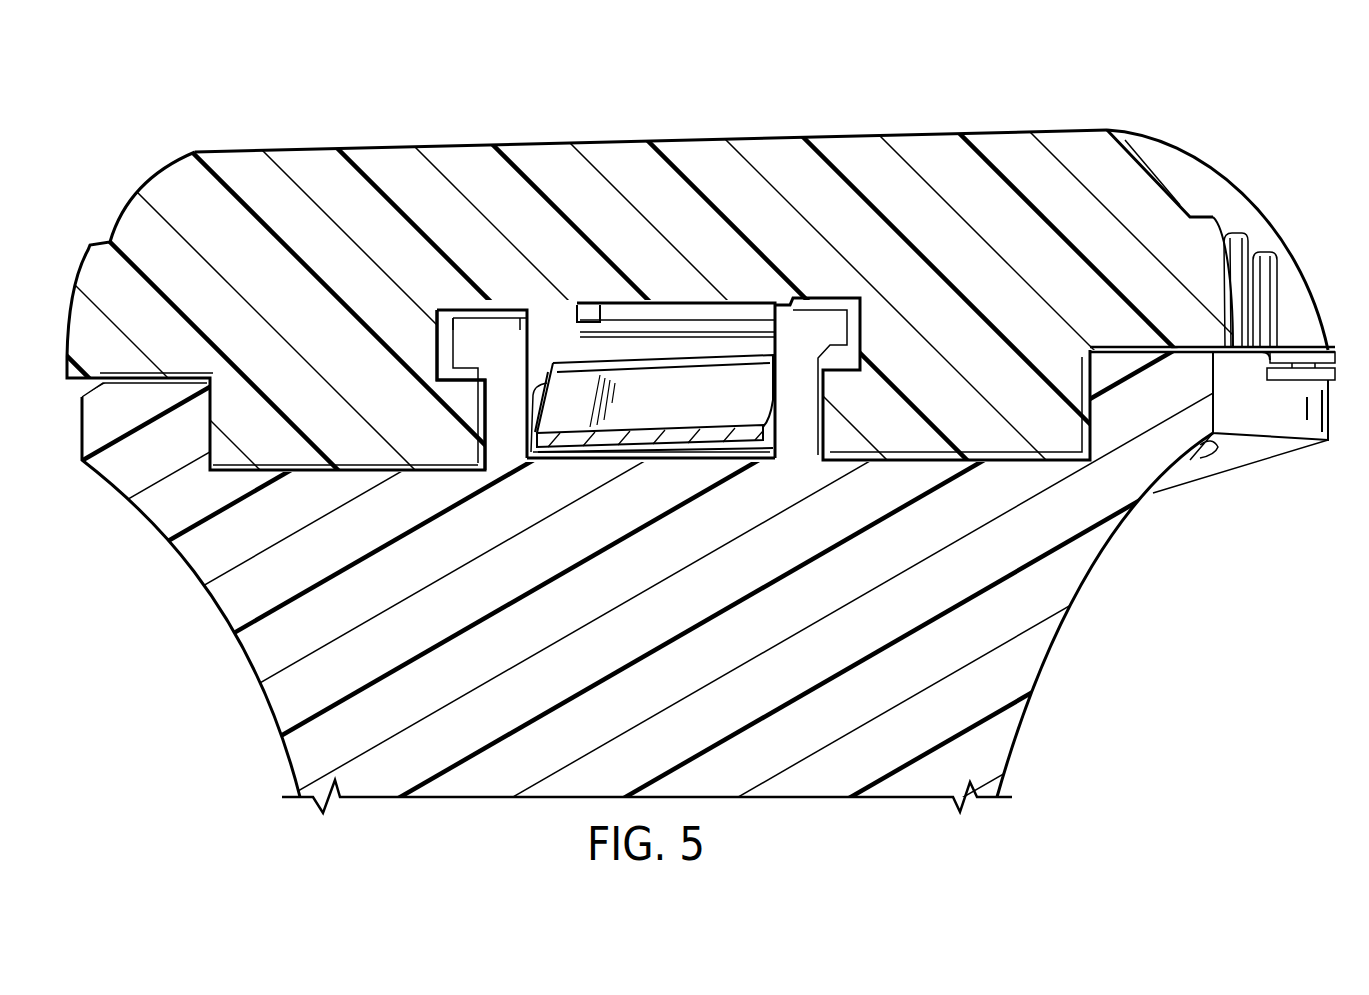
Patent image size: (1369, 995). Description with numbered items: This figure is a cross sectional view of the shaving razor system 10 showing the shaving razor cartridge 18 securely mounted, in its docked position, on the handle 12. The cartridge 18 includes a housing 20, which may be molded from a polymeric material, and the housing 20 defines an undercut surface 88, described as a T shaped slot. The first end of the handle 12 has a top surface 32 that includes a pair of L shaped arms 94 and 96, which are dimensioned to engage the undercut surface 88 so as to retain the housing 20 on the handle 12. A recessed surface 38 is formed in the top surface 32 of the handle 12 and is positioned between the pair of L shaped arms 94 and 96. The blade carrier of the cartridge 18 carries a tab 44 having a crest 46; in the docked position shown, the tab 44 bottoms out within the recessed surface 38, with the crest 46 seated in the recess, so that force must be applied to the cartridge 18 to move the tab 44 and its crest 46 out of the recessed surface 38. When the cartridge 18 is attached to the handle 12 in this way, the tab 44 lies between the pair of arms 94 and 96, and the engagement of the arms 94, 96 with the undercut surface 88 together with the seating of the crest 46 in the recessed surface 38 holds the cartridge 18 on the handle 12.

The shaving razor system 10 is at (380, 97).
The handle 12 is at (1062, 660).
The shaving razor cartridge 18 is at (864, 106).
The housing 20 is at (999, 125).
The top surface 32 is at (447, 313).
The recessed surface 38 is at (543, 457).
The tab 44 is at (655, 387).
The crest 46 is at (673, 453).
The undercut surface 88 is at (447, 349).
The L shaped arm 94 is at (505, 330).
The L shaped arm 96 is at (825, 322).